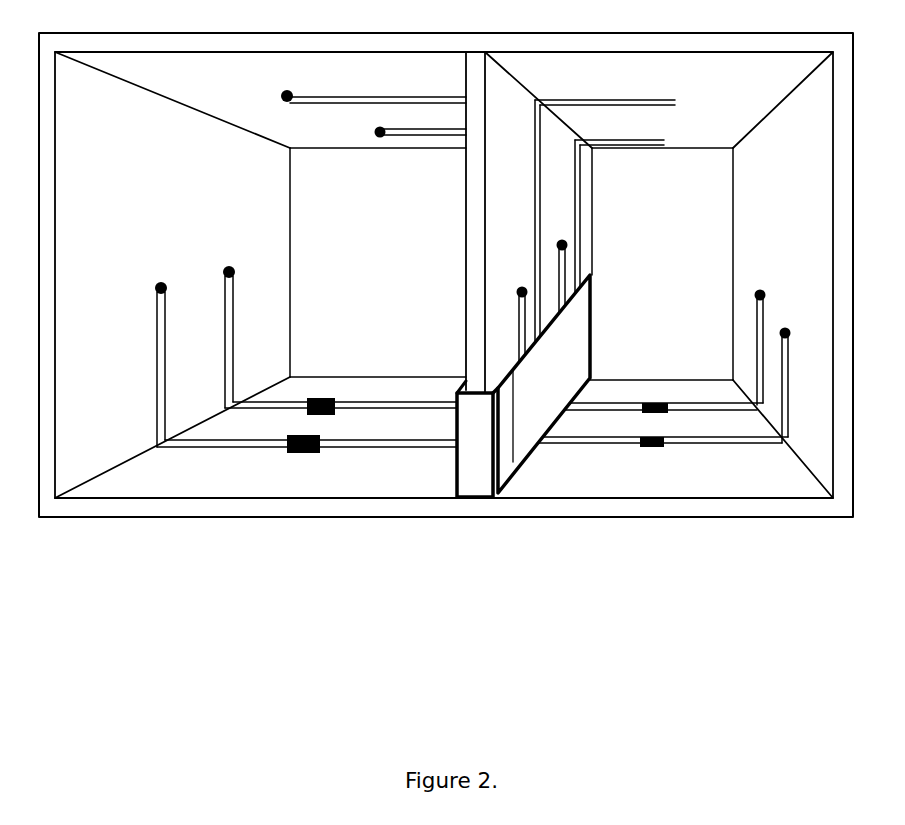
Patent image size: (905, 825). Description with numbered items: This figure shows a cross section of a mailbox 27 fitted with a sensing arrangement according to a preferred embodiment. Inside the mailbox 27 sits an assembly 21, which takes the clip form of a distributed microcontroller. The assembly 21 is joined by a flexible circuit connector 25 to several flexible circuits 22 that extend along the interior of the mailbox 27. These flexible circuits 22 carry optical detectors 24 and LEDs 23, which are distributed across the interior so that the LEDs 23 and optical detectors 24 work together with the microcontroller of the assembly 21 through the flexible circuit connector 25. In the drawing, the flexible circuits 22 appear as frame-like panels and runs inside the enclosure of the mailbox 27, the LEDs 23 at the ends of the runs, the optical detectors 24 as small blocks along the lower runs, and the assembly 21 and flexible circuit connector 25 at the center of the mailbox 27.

The assembly 21 is at (469, 481).
The flexible circuits 22 is at (694, 414).
The LEDs 23 is at (780, 304).
The optical detectors 24 is at (639, 431).
The flexible circuit connector 25 is at (514, 451).
The mailbox 27 is at (782, 519).